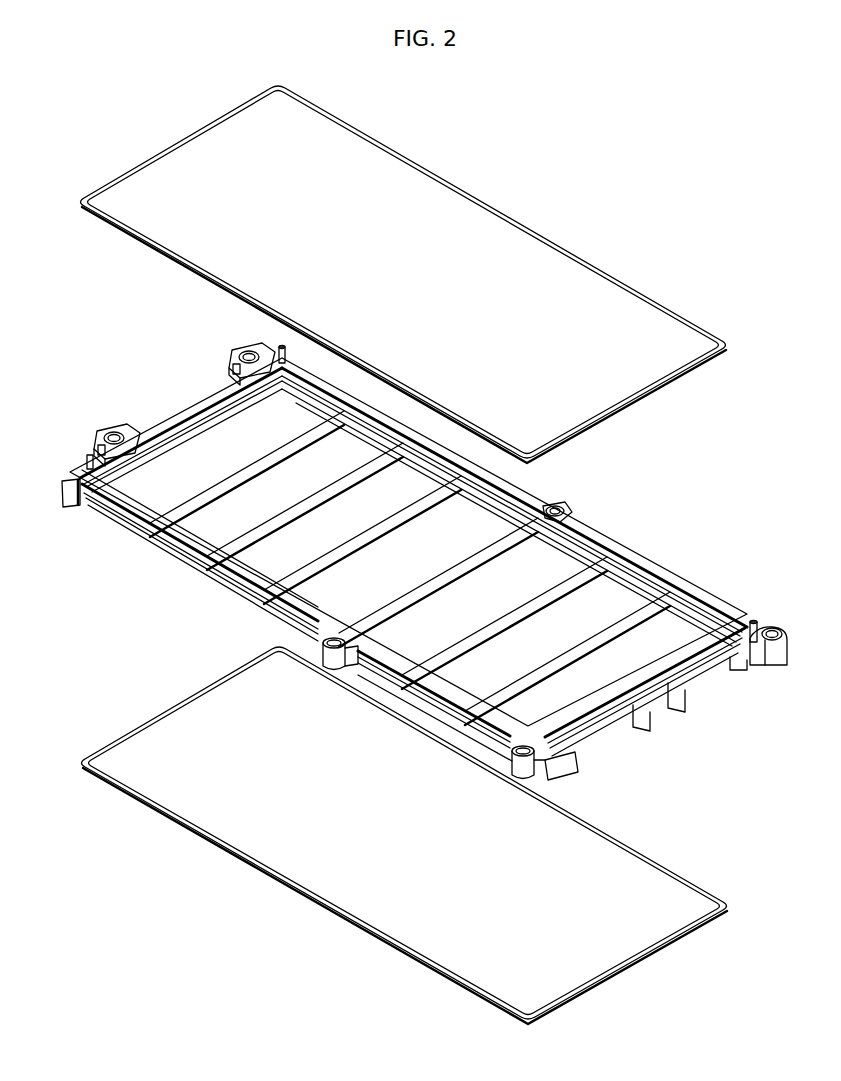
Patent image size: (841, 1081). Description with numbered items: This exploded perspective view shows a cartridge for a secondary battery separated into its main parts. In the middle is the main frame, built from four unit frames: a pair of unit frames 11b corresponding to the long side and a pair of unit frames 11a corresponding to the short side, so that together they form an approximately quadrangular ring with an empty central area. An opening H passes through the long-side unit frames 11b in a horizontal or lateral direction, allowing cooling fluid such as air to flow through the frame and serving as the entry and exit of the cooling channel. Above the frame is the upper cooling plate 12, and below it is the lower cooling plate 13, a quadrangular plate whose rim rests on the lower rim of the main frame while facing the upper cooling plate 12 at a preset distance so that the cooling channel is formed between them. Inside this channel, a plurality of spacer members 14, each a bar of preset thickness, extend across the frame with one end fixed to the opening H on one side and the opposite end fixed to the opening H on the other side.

The upper cooling plate 12 is at (622, 309).
The lower cooling plate 13 is at (622, 869).
The unit frame 11a is at (175, 420).
The unit frame 11b is at (525, 493).
The spacer member 14 is at (653, 607).
The opening H is at (182, 561).